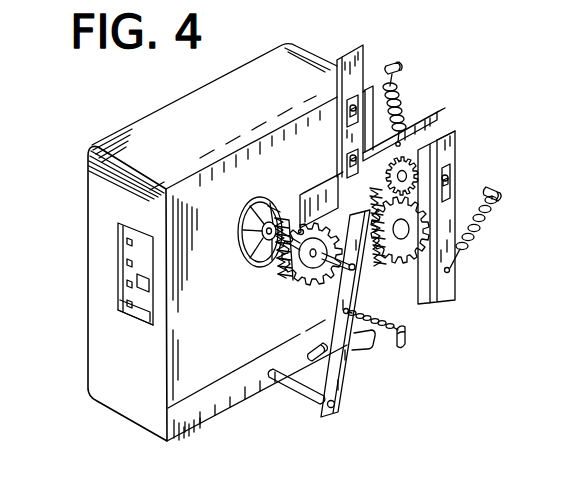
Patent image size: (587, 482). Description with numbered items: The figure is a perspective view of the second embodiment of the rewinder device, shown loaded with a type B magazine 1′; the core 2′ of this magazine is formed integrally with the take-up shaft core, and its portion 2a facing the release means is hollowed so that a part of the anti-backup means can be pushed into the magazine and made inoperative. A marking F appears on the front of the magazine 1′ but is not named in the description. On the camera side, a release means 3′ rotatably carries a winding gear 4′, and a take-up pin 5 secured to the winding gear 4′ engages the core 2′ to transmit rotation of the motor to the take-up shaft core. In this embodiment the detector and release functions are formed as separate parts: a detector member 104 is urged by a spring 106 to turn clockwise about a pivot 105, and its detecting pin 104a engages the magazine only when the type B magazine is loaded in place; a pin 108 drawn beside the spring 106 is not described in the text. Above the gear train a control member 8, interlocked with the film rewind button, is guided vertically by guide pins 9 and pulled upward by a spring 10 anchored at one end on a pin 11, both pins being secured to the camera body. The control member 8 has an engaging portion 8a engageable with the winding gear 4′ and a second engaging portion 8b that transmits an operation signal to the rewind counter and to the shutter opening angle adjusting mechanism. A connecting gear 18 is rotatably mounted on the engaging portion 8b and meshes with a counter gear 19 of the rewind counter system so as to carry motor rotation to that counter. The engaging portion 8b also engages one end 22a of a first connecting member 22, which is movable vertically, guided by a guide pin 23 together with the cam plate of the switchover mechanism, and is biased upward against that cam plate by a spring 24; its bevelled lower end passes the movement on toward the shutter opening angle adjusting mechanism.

The B type magazine 1′ is at (100, 182).
The front panel F is at (128, 276).
The control member 8 is at (355, 62).
The engaging portion 8a is at (312, 188).
The engaging portion 8b is at (440, 114).
The guide pins 9 is at (353, 107).
The spring 10 is at (402, 93).
The spring anchoring pin 11 is at (395, 62).
The connecting gear 18 is at (378, 180).
The counter gear 19 is at (407, 253).
The first connecting member 22 is at (447, 291).
The one end of first connecting member 22a is at (455, 135).
The guide pin 23 is at (452, 173).
The spring 24 is at (483, 232).
The core 2′ is at (247, 248).
The hollowed portion 2a is at (265, 232).
The release means 3′ is at (268, 210).
The winding gear 4′ is at (298, 272).
The take-up pin 5 is at (277, 212).
The detector member 104 is at (338, 390).
The detecting pin 104a is at (297, 390).
The pivot 105 is at (320, 345).
The spring 106 is at (373, 333).
The spring anchor pin 108 is at (406, 328).